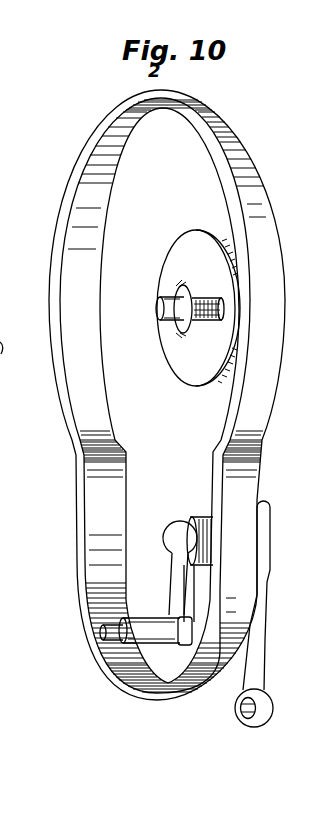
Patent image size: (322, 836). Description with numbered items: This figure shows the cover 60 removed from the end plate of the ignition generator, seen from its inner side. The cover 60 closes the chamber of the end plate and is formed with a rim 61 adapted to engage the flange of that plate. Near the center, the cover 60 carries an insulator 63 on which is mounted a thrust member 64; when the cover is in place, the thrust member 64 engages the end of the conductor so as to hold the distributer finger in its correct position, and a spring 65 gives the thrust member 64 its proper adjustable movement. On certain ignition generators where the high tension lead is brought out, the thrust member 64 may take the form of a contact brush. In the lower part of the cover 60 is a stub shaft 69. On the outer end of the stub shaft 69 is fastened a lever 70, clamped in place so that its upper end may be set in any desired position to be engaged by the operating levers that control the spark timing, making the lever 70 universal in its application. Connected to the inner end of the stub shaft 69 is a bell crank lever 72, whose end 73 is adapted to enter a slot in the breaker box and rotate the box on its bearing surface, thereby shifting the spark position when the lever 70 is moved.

The cover 60 is at (267, 271).
The rim 61 is at (74, 188).
The insulator 63 is at (171, 274).
The thrust member 64 is at (159, 305).
The spring 65 is at (210, 318).
The stub shaft 69 is at (205, 515).
The lever 70 is at (266, 643).
The bell crank lever 72 is at (178, 570).
The end of bell crank lever 73 is at (122, 638).